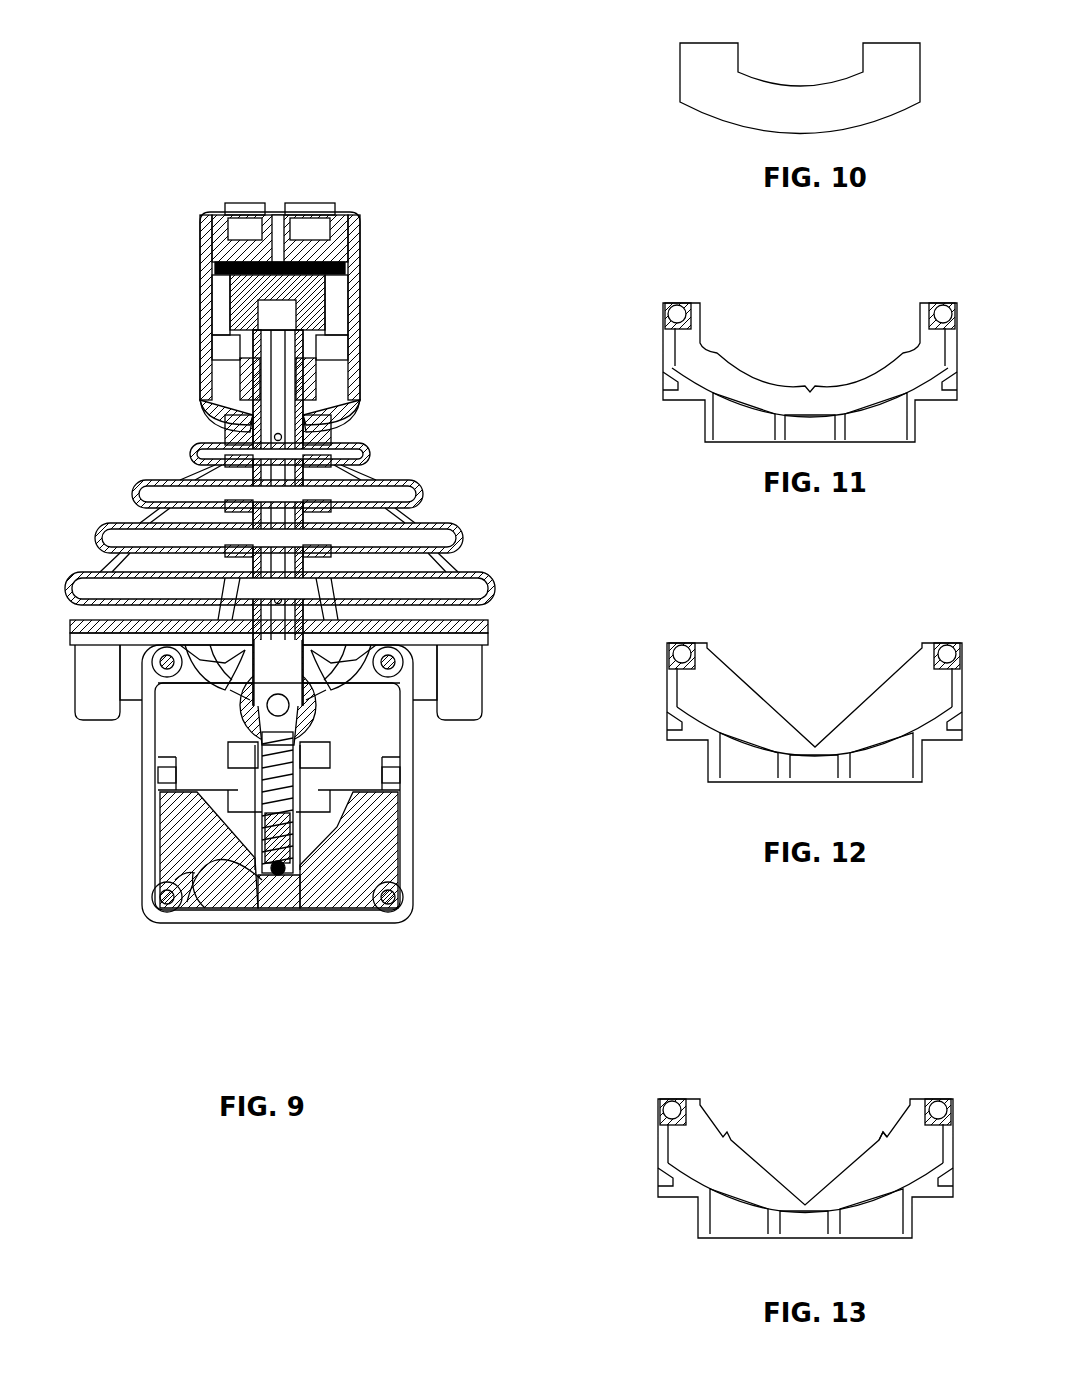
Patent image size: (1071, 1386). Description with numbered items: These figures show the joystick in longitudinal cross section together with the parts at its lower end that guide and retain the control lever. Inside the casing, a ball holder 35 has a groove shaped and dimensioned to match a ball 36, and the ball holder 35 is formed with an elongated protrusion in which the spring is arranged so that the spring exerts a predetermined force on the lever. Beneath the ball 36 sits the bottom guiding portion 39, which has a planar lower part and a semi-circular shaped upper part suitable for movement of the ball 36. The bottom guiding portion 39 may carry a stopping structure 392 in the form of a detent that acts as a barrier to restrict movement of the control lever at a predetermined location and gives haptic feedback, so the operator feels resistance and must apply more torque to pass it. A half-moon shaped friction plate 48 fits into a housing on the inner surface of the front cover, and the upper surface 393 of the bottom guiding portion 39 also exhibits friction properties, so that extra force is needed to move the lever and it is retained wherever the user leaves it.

In FIG. 9, the ball holder 35 is at (290, 843).
In FIG. 9, the ball 36 is at (290, 875).
In FIG. 11, the bottom guiding portion 39 is at (623, 372).
In FIG. 12, the bottom guiding portion 39 is at (647, 707).
In FIG. 13, the bottom guiding portion 39 is at (595, 1217).
In FIG. 10, the friction plate 48 is at (615, 68).
In FIG. 9, the stopping structure 392 is at (182, 882).
In FIG. 13, the stopping structure 392 is at (877, 1138).
In FIG. 9, the upper surface 393 is at (250, 830).
In FIG. 11, the upper surface 393 is at (745, 370).